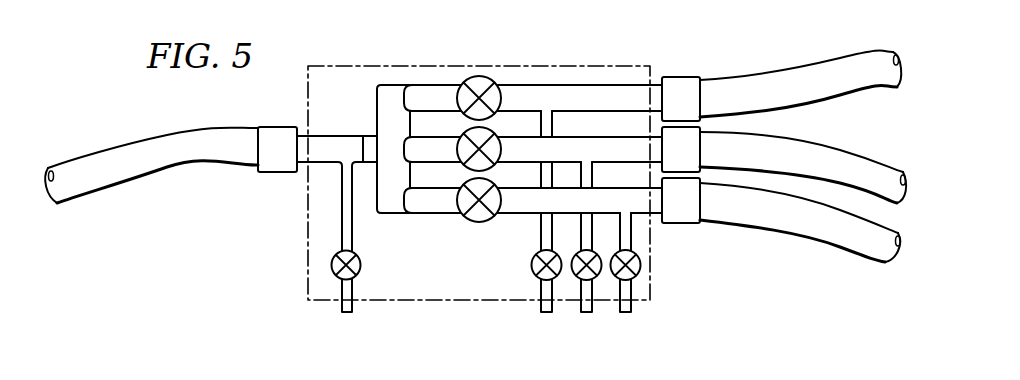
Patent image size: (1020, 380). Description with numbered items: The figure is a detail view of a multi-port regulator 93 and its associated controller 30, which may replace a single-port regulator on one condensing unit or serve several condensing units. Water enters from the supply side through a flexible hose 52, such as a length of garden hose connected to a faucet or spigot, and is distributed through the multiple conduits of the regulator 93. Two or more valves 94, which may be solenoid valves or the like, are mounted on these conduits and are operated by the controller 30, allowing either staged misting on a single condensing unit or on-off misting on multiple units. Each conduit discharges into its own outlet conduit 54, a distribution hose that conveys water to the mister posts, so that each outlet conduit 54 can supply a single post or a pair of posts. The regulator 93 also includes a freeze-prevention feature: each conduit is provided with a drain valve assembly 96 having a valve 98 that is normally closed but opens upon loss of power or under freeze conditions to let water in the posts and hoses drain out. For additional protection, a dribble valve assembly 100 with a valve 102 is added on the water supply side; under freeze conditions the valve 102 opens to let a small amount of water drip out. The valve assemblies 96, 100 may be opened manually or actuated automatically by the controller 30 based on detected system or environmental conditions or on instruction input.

The controller 30 is at (580, 66).
The flexible hose 52 is at (163, 170).
The outlet conduit 54 is at (810, 65).
The multi-port regulator 93 is at (430, 85).
The valves 94 is at (477, 222).
The drain valve assembly 96 is at (546, 313).
The valve 98 is at (532, 268).
The dribble valve assembly 100 is at (344, 313).
The valve 102 is at (360, 263).